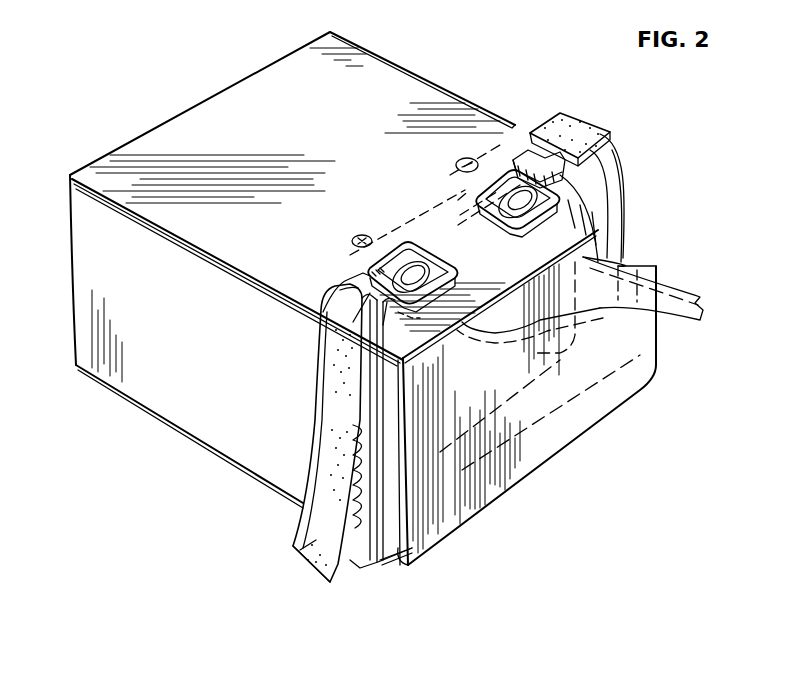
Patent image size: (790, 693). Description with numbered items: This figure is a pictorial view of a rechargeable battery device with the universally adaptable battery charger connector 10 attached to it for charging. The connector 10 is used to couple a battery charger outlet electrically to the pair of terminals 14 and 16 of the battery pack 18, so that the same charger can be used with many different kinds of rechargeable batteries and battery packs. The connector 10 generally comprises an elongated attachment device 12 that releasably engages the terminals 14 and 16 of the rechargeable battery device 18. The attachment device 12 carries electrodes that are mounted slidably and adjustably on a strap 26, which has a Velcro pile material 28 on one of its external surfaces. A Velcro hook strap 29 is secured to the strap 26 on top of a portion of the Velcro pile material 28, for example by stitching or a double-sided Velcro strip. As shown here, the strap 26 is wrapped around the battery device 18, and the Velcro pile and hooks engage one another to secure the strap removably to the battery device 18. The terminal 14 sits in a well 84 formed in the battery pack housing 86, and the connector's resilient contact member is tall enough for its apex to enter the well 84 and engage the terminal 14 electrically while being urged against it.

The universally adaptable battery charger connector 10 is at (621, 140).
The elongated attachment device 12 is at (296, 523).
The terminal 14 is at (397, 255).
The terminal 16 is at (503, 212).
The battery pack 18 is at (243, 413).
The strap 26 is at (317, 542).
The Velcro pile material 28 is at (348, 556).
The Velcro hook strap 29 is at (406, 546).
The well 84 is at (424, 256).
The battery pack housing 86 is at (198, 412).